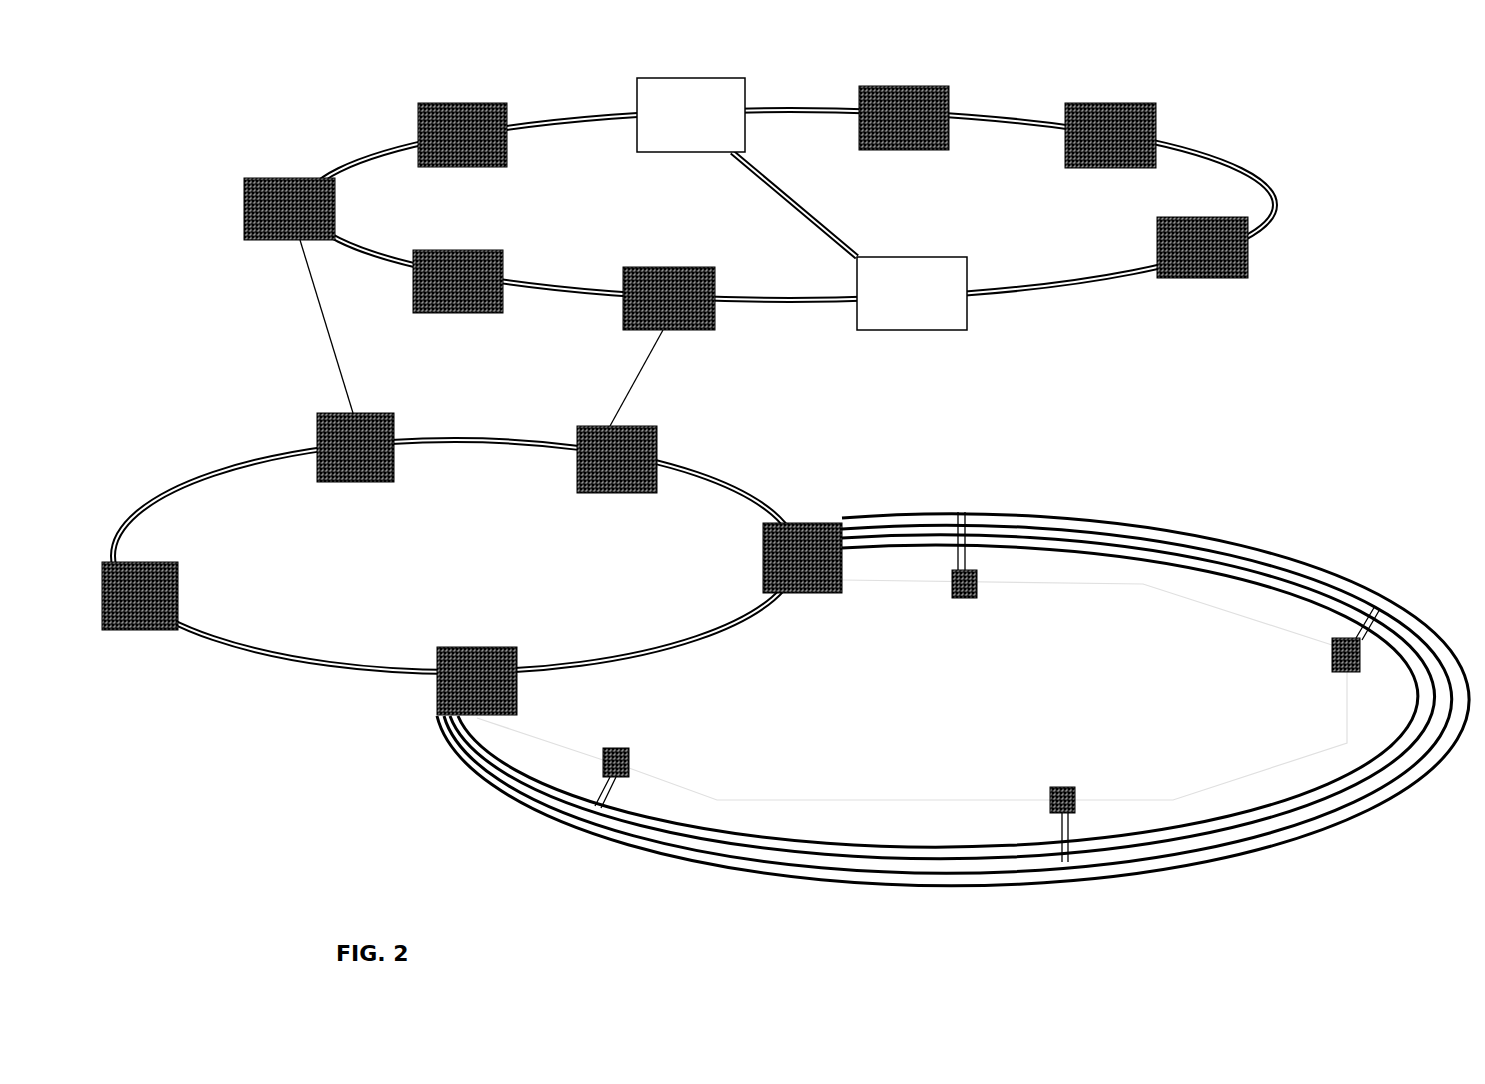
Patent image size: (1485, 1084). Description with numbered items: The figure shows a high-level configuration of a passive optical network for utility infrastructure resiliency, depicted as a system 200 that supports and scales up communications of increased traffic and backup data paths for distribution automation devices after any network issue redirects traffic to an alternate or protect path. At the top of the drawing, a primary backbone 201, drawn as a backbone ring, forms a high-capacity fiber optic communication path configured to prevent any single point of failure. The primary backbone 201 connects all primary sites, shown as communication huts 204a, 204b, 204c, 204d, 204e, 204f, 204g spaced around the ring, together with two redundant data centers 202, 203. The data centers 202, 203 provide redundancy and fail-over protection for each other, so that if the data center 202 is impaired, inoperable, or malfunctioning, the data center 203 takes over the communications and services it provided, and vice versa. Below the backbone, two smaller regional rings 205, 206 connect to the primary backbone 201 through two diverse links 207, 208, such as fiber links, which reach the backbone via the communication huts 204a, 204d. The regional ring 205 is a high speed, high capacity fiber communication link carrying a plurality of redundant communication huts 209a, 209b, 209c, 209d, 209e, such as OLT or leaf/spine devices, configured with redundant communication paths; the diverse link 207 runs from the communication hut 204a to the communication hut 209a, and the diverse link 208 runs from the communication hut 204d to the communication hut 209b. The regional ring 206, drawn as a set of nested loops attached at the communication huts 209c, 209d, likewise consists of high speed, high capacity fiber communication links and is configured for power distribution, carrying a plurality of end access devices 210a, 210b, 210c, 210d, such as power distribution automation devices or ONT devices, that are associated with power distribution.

The system 200 is at (1382, 72).
The primary backbone 201 is at (1013, 282).
The data center 202 is at (691, 115).
The data center 203 is at (912, 293).
The communication hut 204a is at (289, 209).
The communication hut 204b is at (462, 135).
The communication hut 204c is at (458, 281).
The communication hut 204d is at (669, 298).
The communication hut 204e is at (904, 118).
The communication hut 204f is at (1110, 135).
The communication hut 204g is at (1202, 247).
The regional ring 205 is at (697, 478).
The regional ring 206 is at (545, 738).
The diverse link 207 is at (337, 360).
The diverse link 208 is at (650, 367).
The communication hut 209a is at (355, 447).
The communication hut 209b is at (617, 459).
The communication hut 209c is at (802, 558).
The communication hut 209d is at (477, 681).
The communication hut 209e is at (140, 596).
The end access device 210a is at (618, 748).
The end access device 210b is at (1057, 787).
The end access device 210c is at (1335, 675).
The end access device 210d is at (953, 607).